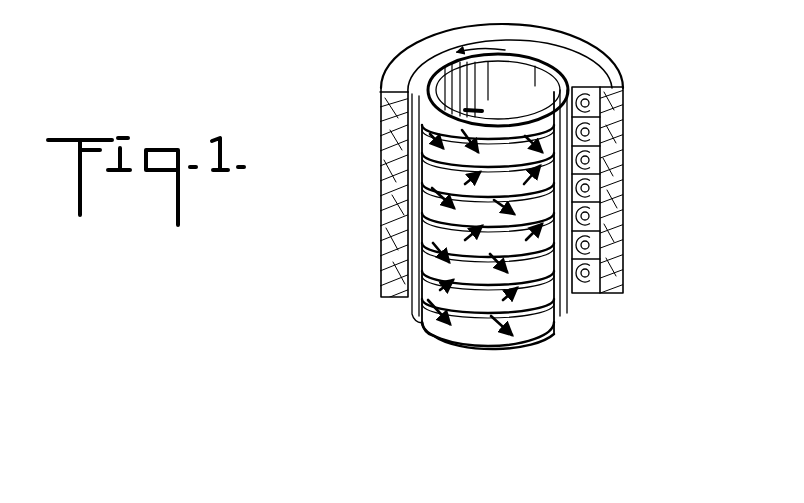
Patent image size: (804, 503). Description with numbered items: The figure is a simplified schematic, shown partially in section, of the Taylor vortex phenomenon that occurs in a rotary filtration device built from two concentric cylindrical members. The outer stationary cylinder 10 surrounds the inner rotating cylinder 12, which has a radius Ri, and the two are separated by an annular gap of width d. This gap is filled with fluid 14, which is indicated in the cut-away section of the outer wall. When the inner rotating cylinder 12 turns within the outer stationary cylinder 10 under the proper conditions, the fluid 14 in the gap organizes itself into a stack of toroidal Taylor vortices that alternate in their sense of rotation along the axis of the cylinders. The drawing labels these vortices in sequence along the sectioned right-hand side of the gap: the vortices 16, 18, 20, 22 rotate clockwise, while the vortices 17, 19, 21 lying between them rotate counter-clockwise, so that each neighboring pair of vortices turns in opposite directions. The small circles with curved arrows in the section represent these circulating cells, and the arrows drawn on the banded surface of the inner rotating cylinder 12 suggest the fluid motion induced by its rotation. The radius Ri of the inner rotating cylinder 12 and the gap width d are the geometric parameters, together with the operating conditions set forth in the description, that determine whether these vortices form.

The outer stationary cylinder 10 is at (381, 184).
The inner rotating cylinder 12 is at (488, 95).
The fluid 14 is at (397, 235).
The clockwise rotating vortex 16 is at (589, 103).
The counter-clockwise rotating vortex 17 is at (589, 132).
The clockwise rotating vortex 18 is at (589, 160).
The counter-clockwise rotating vortex 19 is at (589, 188).
The clockwise rotating vortex 20 is at (589, 216).
The counter-clockwise rotating vortex 21 is at (589, 245).
The clockwise rotating vortex 22 is at (589, 273).
The radius of inner rotating cylinder Ri is at (452, 52).
The gap width d is at (421, 80).